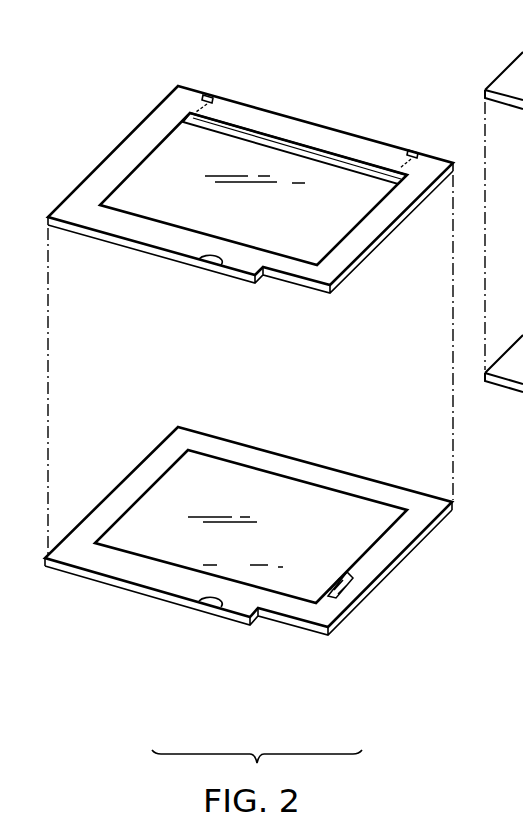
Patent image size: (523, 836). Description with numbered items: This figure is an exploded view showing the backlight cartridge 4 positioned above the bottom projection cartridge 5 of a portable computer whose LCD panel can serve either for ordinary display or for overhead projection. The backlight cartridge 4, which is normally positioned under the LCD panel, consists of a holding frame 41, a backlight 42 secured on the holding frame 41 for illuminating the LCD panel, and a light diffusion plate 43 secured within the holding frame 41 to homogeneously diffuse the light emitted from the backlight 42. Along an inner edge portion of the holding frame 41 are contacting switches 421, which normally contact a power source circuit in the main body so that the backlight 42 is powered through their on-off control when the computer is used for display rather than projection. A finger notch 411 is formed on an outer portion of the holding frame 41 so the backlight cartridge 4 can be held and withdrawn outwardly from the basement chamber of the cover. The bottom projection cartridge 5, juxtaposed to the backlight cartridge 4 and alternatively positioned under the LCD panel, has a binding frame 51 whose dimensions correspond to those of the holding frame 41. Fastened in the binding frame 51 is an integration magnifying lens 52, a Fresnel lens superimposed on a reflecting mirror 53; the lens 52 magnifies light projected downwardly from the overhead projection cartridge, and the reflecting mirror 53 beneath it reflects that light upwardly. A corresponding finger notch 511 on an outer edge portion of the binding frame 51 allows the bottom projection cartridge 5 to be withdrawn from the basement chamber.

The backlight cartridge 4 is at (282, 210).
The holding frame 41 is at (98, 180).
The backlight 42 is at (297, 143).
The light diffusion plate 43 is at (345, 205).
The contacting switch 421 is at (209, 94).
The finger notch 411 is at (216, 267).
The bottom projection cartridge 5 is at (248, 544).
The binding frame 51 is at (83, 535).
The integration magnifying lens 52 is at (345, 507).
The reflecting mirror 53 is at (347, 592).
The finger notch 511 is at (219, 608).